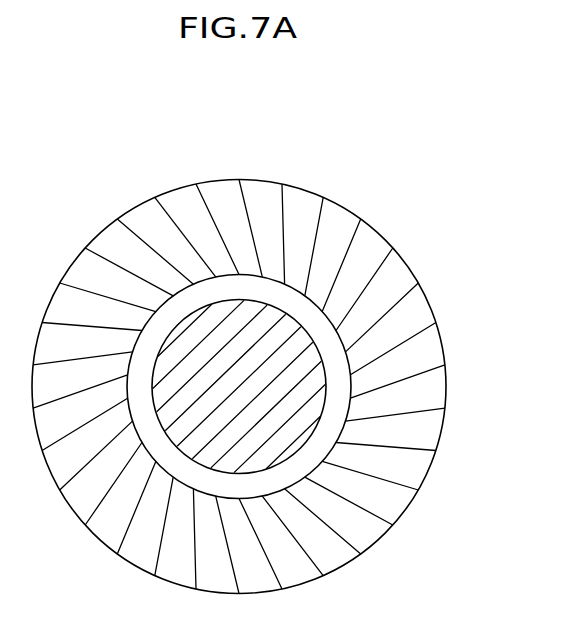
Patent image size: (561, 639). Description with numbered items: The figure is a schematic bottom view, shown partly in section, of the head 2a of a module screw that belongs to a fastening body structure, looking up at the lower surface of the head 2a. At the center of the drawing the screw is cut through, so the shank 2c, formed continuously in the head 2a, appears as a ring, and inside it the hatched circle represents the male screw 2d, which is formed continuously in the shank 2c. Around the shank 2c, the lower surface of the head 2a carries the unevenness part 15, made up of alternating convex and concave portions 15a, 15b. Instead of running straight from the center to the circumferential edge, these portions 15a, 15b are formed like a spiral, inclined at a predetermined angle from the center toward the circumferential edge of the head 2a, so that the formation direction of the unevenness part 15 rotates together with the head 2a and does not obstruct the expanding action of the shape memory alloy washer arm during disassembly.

The unevenness part 15 is at (239, 346).
The convex part 15a is at (233, 189).
The concave part 15b is at (219, 227).
The head 2a is at (378, 232).
The shank 2c is at (350, 338).
The male screw 2d is at (312, 405).